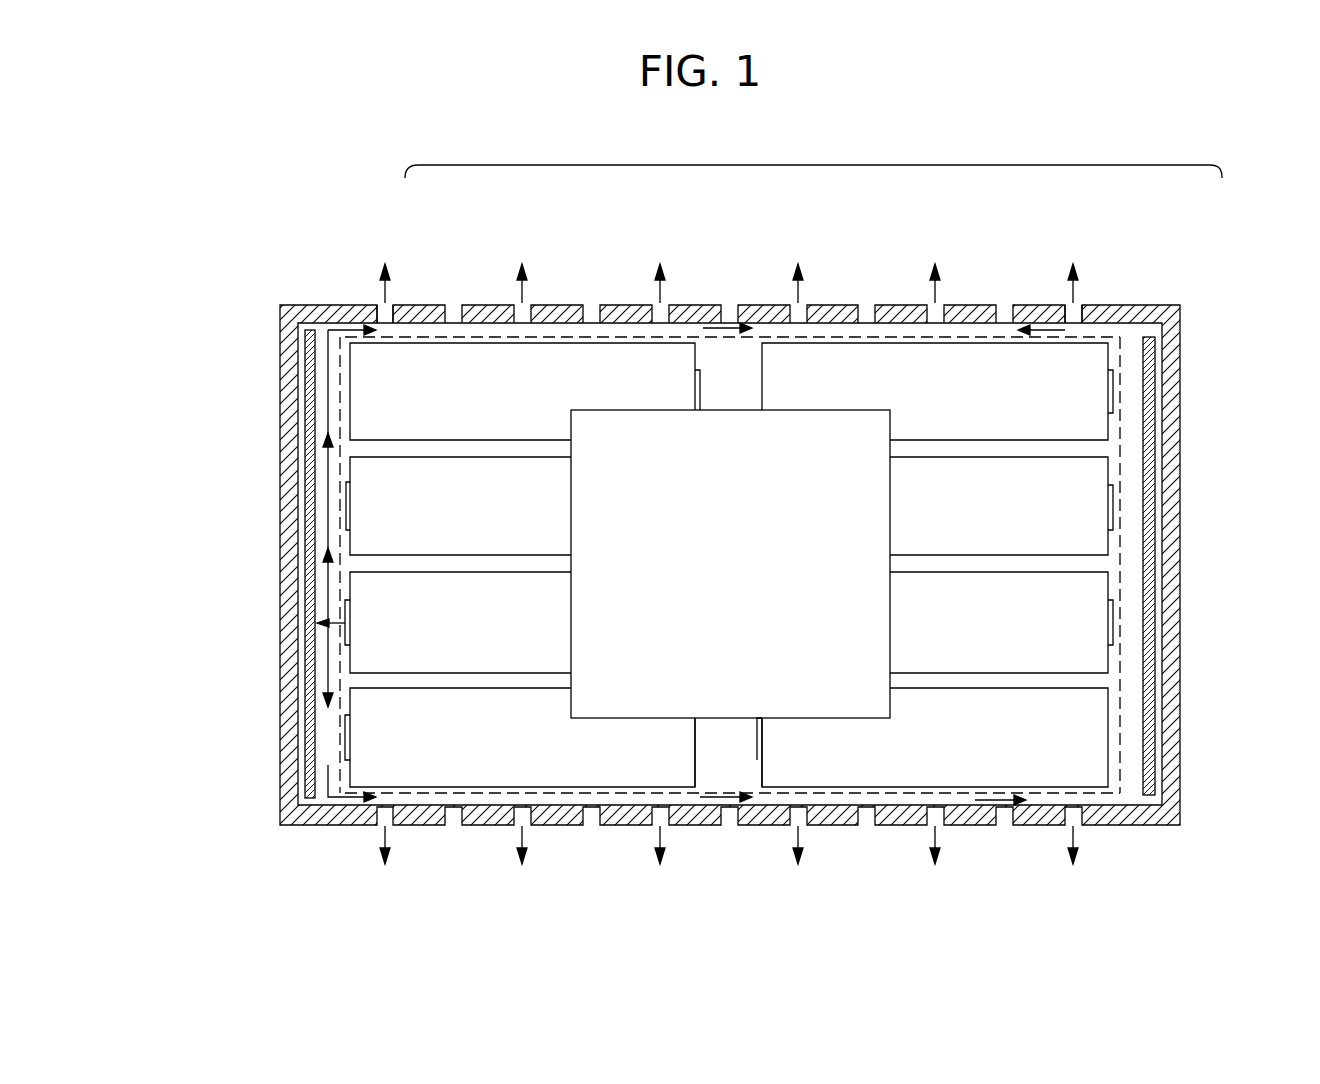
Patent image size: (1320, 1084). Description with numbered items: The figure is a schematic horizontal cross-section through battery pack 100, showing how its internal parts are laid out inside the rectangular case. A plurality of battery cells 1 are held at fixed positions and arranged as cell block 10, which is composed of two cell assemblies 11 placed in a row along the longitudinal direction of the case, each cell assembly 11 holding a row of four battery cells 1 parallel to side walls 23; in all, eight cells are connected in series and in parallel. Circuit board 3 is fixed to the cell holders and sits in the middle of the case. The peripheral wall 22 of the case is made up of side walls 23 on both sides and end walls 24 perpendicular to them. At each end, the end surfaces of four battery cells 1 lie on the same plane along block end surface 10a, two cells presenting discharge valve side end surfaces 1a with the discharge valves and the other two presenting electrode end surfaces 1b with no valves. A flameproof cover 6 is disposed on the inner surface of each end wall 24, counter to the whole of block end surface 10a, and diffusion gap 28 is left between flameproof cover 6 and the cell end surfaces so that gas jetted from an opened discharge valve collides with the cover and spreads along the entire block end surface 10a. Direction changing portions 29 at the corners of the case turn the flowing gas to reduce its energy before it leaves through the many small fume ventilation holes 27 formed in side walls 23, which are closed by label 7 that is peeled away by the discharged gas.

The battery pack 100 is at (258, 178).
The battery cell 1 is at (490, 527).
The discharge valve side end surface 1a is at (348, 638).
The electrode end surface 1b is at (348, 506).
The circuit board 3 is at (712, 575).
The flameproof cover 6 is at (297, 600).
The label 7 is at (562, 305).
The cell block 10 is at (615, 797).
The block end surface 10a is at (341, 541).
The cell assembly 11 is at (493, 806).
The peripheral wall 22 is at (735, 165).
The side wall 23 is at (614, 305).
The end wall 24 is at (313, 425).
The fume ventilation hole 27 is at (374, 303).
The diffusion gap 28 is at (331, 732).
The direction changing portion 29 is at (318, 330).